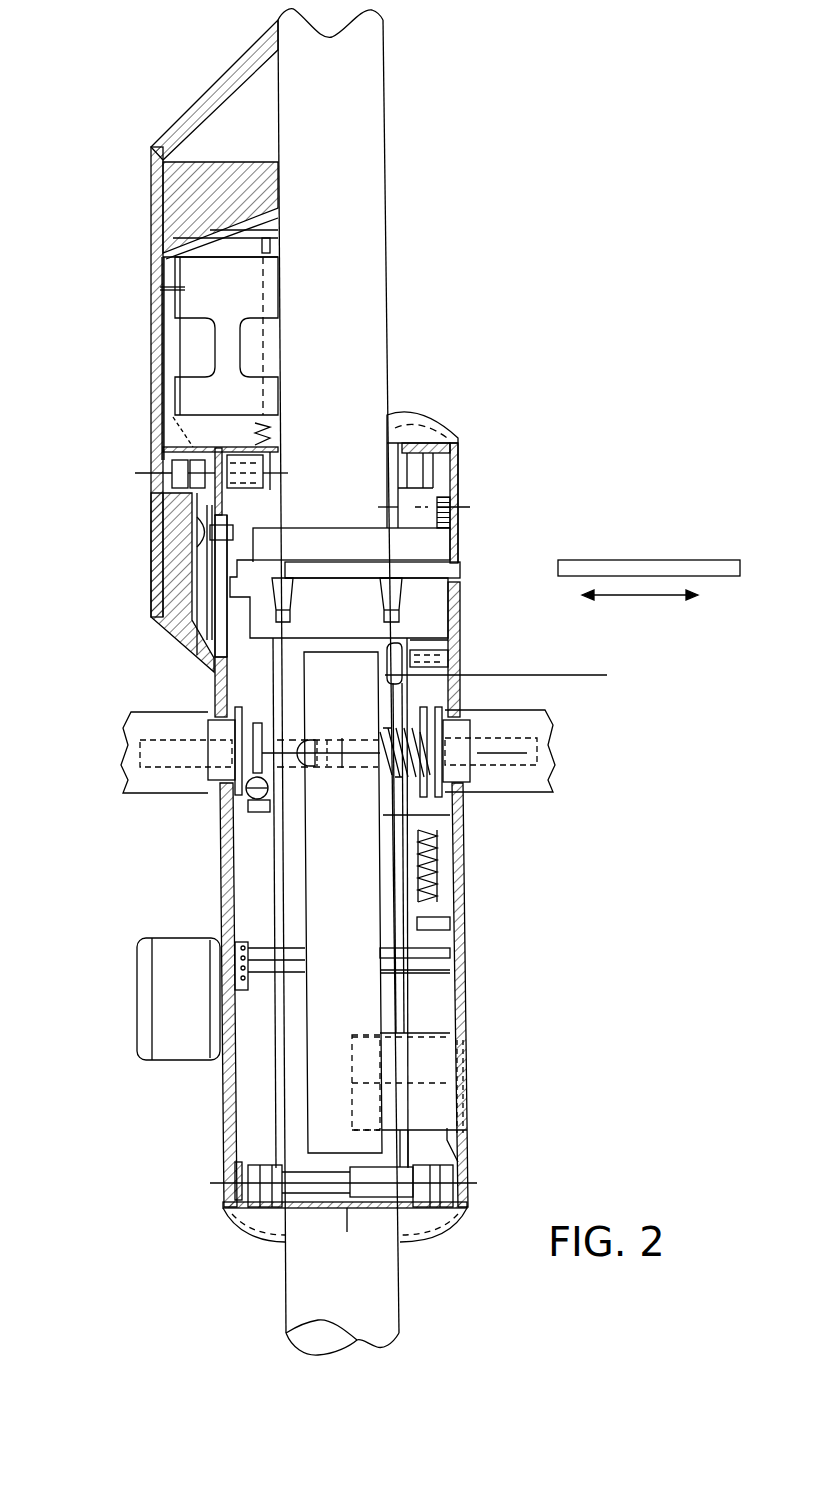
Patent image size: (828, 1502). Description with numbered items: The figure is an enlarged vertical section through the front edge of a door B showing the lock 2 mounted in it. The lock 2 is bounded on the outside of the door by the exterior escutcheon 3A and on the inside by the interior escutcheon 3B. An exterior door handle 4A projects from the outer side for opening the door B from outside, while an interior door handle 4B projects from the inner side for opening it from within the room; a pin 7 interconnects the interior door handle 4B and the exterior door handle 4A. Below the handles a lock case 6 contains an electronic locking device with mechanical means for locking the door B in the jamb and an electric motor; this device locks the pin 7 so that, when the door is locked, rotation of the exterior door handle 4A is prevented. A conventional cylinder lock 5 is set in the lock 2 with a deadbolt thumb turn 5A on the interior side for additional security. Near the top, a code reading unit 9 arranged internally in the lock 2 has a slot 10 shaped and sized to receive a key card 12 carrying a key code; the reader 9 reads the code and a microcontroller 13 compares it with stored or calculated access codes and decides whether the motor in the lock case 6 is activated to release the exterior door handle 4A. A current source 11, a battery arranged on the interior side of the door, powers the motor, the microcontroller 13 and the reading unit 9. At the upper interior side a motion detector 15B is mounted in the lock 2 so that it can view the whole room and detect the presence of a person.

The lock 2 is at (115, 406).
The door B is at (357, 103).
The motion detector 15B is at (170, 170).
The current source 11 is at (202, 345).
The interior escutcheon 3B is at (215, 685).
The exterior escutcheon 3A is at (460, 467).
The code reading unit 9 is at (428, 542).
The slot 10 is at (494, 572).
The key card 12 is at (648, 560).
The exterior door handle 4A is at (533, 717).
The interior door handle 4B is at (148, 733).
The pin 7 is at (268, 755).
The microcontroller 13 is at (248, 897).
The deadbolt thumb turn 5A is at (175, 1005).
The lock case 6 is at (305, 960).
The cylinder lock 5 is at (428, 1055).